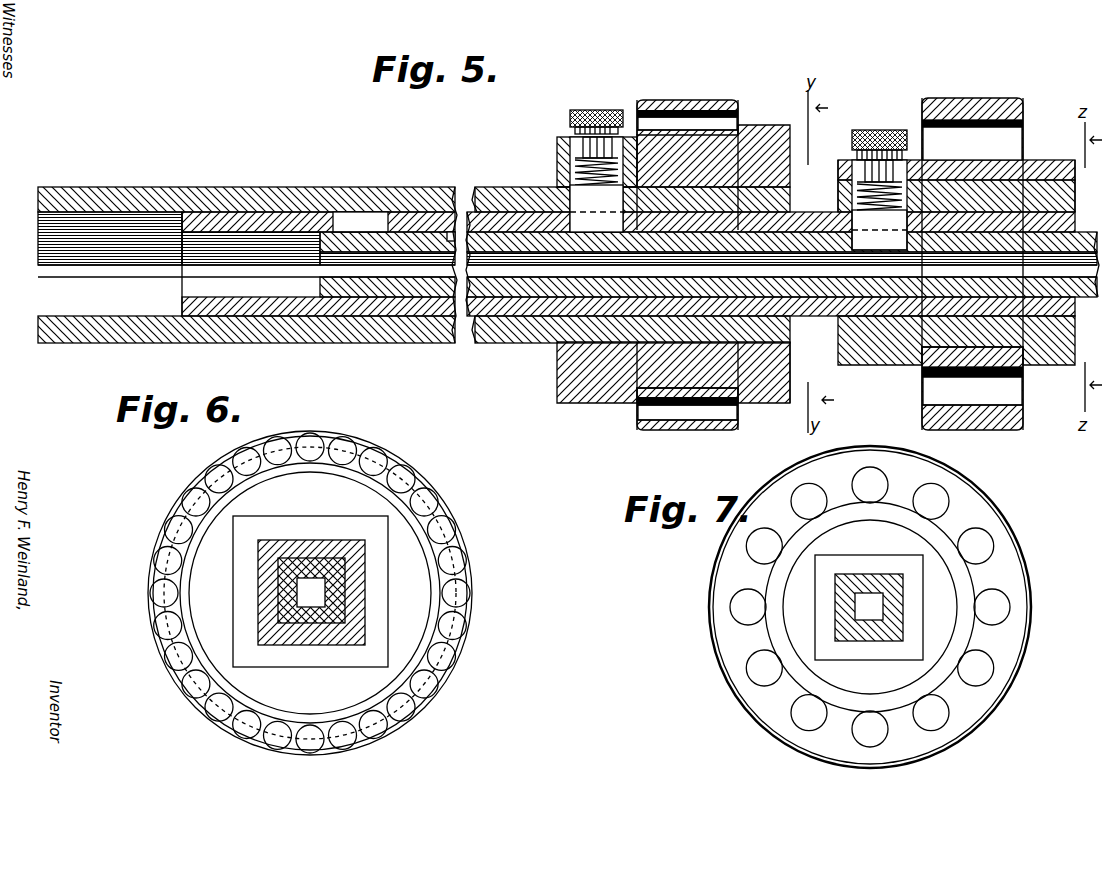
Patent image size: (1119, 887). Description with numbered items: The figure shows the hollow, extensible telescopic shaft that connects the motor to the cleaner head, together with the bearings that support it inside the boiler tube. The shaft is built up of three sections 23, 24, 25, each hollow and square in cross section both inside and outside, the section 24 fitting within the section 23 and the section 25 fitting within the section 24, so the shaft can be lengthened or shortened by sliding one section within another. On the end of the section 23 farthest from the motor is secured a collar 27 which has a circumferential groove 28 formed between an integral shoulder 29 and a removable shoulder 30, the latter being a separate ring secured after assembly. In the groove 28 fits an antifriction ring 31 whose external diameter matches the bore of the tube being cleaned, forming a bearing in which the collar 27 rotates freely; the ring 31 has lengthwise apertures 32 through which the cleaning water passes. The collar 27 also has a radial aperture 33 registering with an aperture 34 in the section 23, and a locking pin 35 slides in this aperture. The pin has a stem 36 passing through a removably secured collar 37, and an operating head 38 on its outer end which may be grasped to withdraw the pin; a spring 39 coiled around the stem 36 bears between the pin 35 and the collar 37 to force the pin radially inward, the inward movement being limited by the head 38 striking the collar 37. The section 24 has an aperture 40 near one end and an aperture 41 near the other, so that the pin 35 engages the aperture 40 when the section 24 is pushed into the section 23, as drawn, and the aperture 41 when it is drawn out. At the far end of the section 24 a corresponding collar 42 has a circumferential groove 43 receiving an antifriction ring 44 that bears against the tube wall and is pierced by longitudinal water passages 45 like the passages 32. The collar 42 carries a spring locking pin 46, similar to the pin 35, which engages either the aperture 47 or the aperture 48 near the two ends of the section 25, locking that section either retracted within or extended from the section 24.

In FIG. 5, the shaft section 23 is at (195, 200).
In FIG. 5, the shaft section 24 is at (420, 215).
In FIG. 6, the shaft section 24 is at (293, 540).
In FIG. 7, the shaft section 24 is at (863, 558).
In FIG. 5, the shaft section 25 is at (305, 318).
In FIG. 6, the shaft section 25 is at (282, 585).
In FIG. 7, the shaft section 25 is at (875, 640).
In FIG. 5, the collar 27 is at (747, 150).
In FIG. 6, the collar 27 is at (407, 535).
In FIG. 5, the circumferential groove 28 is at (633, 393).
In FIG. 6, the circumferential groove 28 is at (280, 707).
In FIG. 5, the integral shoulder 29 is at (593, 398).
In FIG. 6, the integral shoulder 29 is at (387, 597).
In FIG. 5, the removable shoulder 30 is at (775, 398).
In FIG. 6, the removable shoulder 30 is at (447, 567).
In FIG. 5, the antifriction ring 31 is at (693, 428).
In FIG. 6, the antifriction ring 31 is at (195, 483).
In FIG. 5, the apertures 32 is at (702, 103).
In FIG. 6, the apertures 32 is at (165, 552).
In FIG. 5, the radial aperture 33 is at (572, 165).
In FIG. 5, the aperture 34 is at (558, 195).
In FIG. 5, the locking pin 35 is at (522, 205).
In FIG. 5, the stem 36 is at (570, 157).
In FIG. 5, the collar 37 is at (577, 142).
In FIG. 5, the operating head 38 is at (596, 110).
In FIG. 5, the spring 39 is at (593, 150).
In FIG. 5, the aperture 40 is at (590, 232).
In FIG. 5, the aperture 41 is at (358, 222).
In FIG. 5, the collar 42 is at (1063, 190).
In FIG. 7, the collar 42 is at (790, 618).
In FIG. 5, the circumferential groove 43 is at (1030, 180).
In FIG. 7, the circumferential groove 43 is at (953, 633).
In FIG. 5, the antifriction ring 44 is at (990, 103).
In FIG. 7, the antifriction ring 44 is at (988, 512).
In FIG. 5, the longitudinal water passages 45 is at (1010, 395).
In FIG. 7, the longitudinal water passages 45 is at (743, 598).
In FIG. 5, the spring locking pin 46 is at (863, 217).
In FIG. 5, the aperture 47 is at (870, 250).
In FIG. 5, the aperture 48 is at (452, 240).